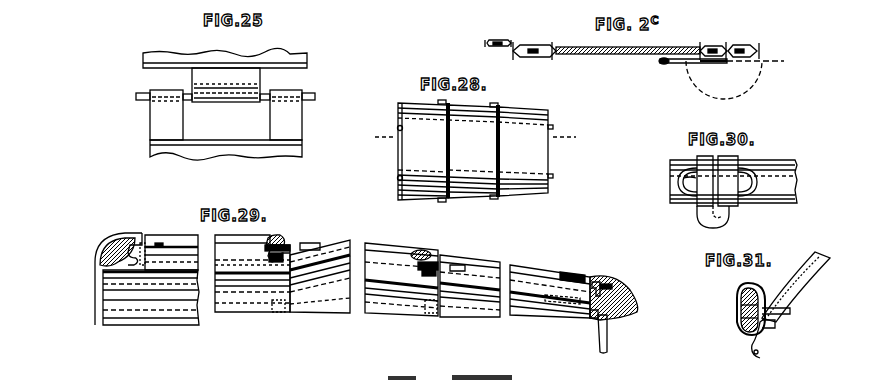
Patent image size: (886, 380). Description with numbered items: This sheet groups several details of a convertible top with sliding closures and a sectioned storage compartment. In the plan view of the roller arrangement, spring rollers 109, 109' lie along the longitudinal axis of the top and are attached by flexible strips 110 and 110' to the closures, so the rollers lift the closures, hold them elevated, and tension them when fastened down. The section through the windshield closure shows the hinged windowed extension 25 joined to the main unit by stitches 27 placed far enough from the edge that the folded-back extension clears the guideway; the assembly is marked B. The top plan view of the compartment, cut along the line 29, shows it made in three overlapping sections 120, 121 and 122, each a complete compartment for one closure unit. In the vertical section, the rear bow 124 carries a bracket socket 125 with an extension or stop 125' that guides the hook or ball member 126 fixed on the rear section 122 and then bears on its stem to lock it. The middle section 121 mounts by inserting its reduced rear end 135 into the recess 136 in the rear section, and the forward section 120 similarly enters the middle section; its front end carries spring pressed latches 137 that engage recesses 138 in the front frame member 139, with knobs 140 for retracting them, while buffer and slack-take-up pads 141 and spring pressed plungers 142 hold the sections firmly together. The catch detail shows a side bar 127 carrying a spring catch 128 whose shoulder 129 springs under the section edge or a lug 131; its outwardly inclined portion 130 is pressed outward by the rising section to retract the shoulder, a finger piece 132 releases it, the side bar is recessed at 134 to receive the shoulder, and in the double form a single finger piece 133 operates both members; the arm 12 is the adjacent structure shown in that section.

In FIG. 25, the flexible strip 110 is at (226, 115).
In FIG. 25, the flexible strip 110' is at (226, 85).
In FIG. 25, the spring roller 109 is at (239, 84).
In FIG. 25, the spring roller 109' is at (226, 110).
In FIG. 2C, the assembly B is at (622, 55).
In FIG. 2C, the hinged windowed extension 25 is at (676, 63).
In FIG. 2C, the stitches 27 is at (720, 63).
In FIG. 28, the section line 29 is at (376, 145).
In FIG. 28, the rear section 122 is at (423, 151).
In FIG. 29, the rear section 122 is at (151, 297).
In FIG. 28, the middle section 121 is at (472, 151).
In FIG. 29, the middle section 121 is at (320, 276).
In FIG. 28, the forward section 120 is at (524, 151).
In FIG. 29, the forward section 120 is at (432, 280).
In FIG. 28, the bracket hook or ball member 126 is at (398, 178).
In FIG. 29, the bracket hook or ball member 126 is at (125, 272).
In FIG. 30, the side bar 127 is at (733, 181).
In FIG. 31, the side bar 127 is at (740, 335).
In FIG. 30, the spring catch 128 is at (700, 170).
In FIG. 31, the spring catch 128 is at (740, 288).
In FIG. 30, the recess 134 is at (684, 184).
In FIG. 31, the recess 134 is at (740, 303).
In FIG. 30, the operating finger piece 133 is at (718, 215).
In FIG. 29, the rear bow 124 is at (110, 243).
In FIG. 29, the extension or stop 125' is at (117, 229).
In FIG. 29, the bracket socket 125 is at (102, 270).
In FIG. 29, the buffer and slack-take-up pad 141 is at (175, 230).
In FIG. 29, the recess 136 is at (272, 255).
In FIG. 29, the reduced rear end 135 is at (280, 258).
In FIG. 29, the shoulder or lug 131 is at (282, 311).
In FIG. 31, the shoulder or lug 131 is at (772, 306).
In FIG. 29, the knob 140 is at (567, 318).
In FIG. 29, the front frame member 139 is at (616, 308).
In FIG. 29, the spring pressed plunger 142 is at (610, 283).
In FIG. 29, the recess 138 is at (592, 315).
In FIG. 29, the spring pressed latch 137 is at (588, 320).
In FIG. 31, the shoulder 129 is at (740, 318).
In FIG. 31, the arm 12 is at (790, 318).
In FIG. 31, the outwardly inclined portion 130 is at (762, 328).
In FIG. 31, the finger piece 132 is at (758, 354).